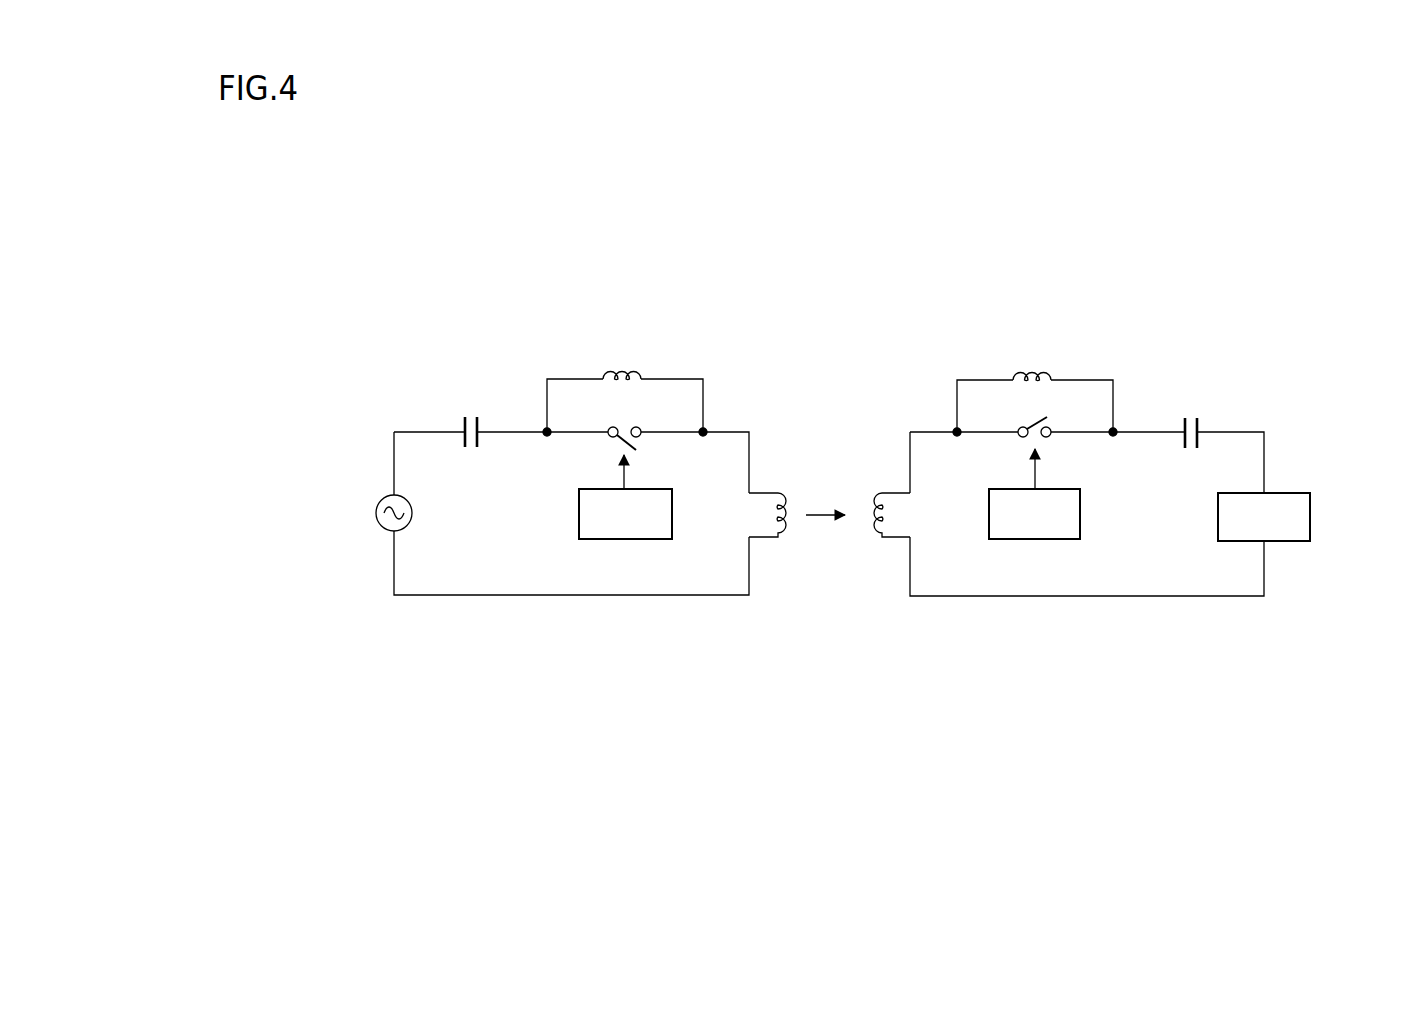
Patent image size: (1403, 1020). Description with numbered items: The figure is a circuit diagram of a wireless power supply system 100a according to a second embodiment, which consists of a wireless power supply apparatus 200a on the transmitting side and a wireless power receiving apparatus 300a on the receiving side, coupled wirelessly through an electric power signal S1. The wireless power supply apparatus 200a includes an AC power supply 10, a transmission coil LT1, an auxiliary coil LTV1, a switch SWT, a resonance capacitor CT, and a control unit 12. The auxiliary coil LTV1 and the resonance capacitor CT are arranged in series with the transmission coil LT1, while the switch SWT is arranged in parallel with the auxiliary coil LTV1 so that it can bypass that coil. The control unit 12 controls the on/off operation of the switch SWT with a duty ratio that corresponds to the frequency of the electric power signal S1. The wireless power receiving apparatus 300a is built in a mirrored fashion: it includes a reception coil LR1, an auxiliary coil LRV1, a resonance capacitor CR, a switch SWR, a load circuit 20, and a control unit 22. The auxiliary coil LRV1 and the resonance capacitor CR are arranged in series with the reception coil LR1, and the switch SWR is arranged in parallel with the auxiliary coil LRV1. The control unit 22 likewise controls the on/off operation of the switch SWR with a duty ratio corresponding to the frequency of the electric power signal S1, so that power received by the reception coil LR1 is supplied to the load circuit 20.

The wireless power supply system 100a is at (856, 663).
The wireless power supply apparatus 200a is at (544, 327).
The wireless power receiving apparatus 300a is at (1119, 328).
The AC power supply 10 is at (378, 526).
The control unit 12 is at (578, 523).
The load circuit 20 is at (1311, 531).
The control unit 22 is at (1081, 528).
The electric power signal S1 is at (825, 503).
The resonance capacitor CT is at (470, 452).
The resonance capacitor CR is at (1189, 453).
The transmission coil LT1 is at (771, 547).
The reception coil LR1 is at (885, 547).
The auxiliary coil LTV1 is at (637, 368).
The auxiliary coil LRV1 is at (1047, 368).
The switch SWT is at (622, 422).
The switch SWR is at (1030, 419).